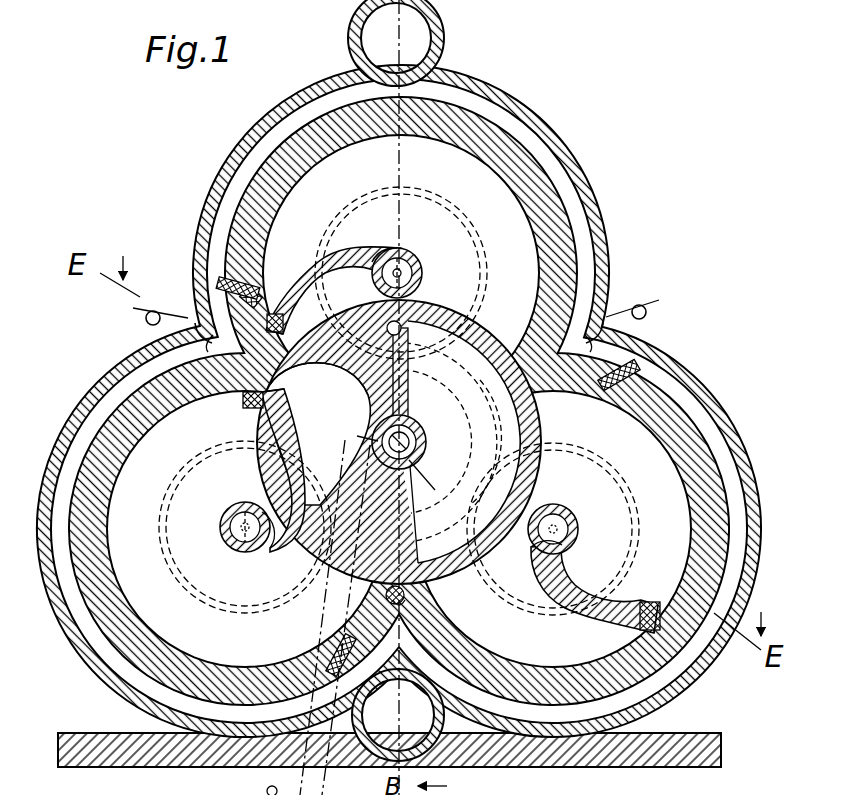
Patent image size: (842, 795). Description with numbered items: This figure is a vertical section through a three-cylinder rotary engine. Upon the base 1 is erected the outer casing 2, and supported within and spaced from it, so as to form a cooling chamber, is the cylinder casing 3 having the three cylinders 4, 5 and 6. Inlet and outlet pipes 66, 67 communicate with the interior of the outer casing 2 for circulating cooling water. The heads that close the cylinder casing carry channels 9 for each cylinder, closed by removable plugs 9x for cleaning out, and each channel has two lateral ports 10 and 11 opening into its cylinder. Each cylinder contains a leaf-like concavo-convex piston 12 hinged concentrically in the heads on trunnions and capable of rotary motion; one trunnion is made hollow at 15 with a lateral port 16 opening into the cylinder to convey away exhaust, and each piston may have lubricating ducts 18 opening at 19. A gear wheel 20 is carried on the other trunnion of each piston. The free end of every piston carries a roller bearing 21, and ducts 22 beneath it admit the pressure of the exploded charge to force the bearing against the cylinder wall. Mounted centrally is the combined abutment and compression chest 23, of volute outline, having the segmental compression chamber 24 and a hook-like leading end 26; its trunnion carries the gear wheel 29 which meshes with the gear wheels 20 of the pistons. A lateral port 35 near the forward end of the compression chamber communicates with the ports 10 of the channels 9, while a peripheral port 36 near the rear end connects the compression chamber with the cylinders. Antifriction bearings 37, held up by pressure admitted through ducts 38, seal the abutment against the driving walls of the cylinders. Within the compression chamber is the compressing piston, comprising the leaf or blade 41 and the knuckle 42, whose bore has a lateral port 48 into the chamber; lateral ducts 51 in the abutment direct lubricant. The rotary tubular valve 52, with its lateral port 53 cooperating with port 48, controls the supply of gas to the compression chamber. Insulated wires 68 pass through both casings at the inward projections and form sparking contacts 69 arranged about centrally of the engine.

The base 1 is at (601, 767).
The outer casing 2 is at (558, 137).
The cylinder casing 3 is at (552, 200).
The cylinder 4 is at (401, 273).
The cylinder 5 is at (245, 529).
The cylinder 6 is at (553, 529).
The channel 9 is at (421, 437).
The removable plug 9x is at (216, 286).
The lateral port 10 is at (420, 306).
The lateral port 11 is at (610, 448).
The piston 12 is at (320, 263).
The hollow portion of trunnion 15 is at (229, 531).
The lateral port 16 is at (366, 256).
The duct 18 is at (421, 272).
The duct opening 19 is at (406, 258).
The gear wheel 20 is at (465, 205).
The roller bearing 21 is at (255, 345).
The duct 22 is at (286, 302).
The abutment and compression chest 23 is at (492, 334).
The compression chamber 24 is at (489, 442).
The hook-like leading end 26 is at (318, 434).
The gear wheel 29 is at (451, 442).
The lateral port 35 is at (437, 429).
The peripheral port 36 is at (406, 590).
The antifriction bearing 37 is at (566, 350).
The duct 38 is at (198, 343).
The leaf or blade 41 is at (409, 396).
The knuckle 42 is at (426, 476).
The lateral port 48 is at (355, 435).
The lateral duct 51 is at (410, 516).
The rotary tubular valve 52 is at (420, 438).
The lateral port 53 is at (421, 446).
The inlet pipe 66 is at (398, 715).
The outlet pipe 67 is at (396, 43).
The insulated wire 68 is at (146, 316).
The sparking contact 69 is at (547, 404).